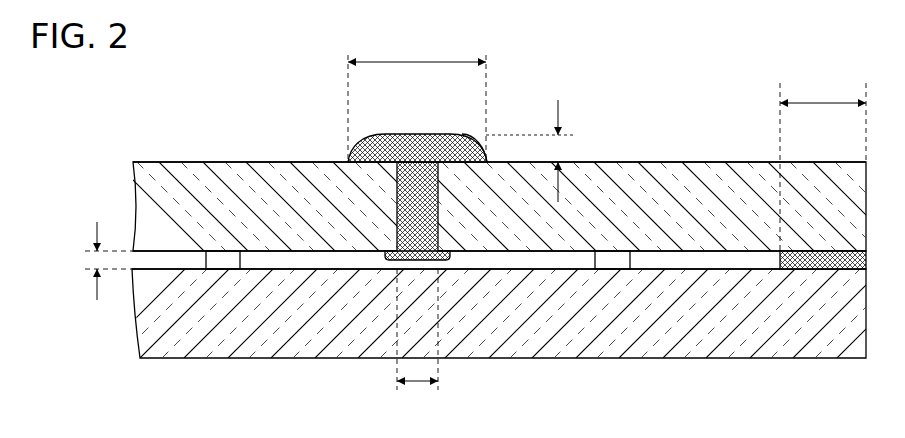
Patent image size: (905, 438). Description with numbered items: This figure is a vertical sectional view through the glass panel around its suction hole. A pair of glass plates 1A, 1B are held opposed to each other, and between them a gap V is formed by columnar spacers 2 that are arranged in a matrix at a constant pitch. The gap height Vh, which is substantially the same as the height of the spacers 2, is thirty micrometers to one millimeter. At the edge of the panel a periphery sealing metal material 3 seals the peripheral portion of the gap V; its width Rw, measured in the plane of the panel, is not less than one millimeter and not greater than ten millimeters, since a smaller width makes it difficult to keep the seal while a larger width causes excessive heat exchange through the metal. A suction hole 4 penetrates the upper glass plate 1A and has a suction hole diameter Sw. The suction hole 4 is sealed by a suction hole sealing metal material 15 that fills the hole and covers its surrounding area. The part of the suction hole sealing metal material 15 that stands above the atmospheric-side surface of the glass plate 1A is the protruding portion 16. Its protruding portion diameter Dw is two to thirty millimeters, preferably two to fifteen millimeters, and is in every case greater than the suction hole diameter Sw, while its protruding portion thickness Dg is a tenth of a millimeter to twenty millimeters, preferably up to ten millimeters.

The glass plate 1A is at (693, 178).
The glass plate 1B is at (614, 345).
The columnar spacer 2 is at (223, 258).
The periphery sealing metal material 3 is at (810, 270).
The suction hole 4 is at (422, 260).
The suction hole sealing metal material 15 is at (418, 135).
The protruding portion 16 is at (487, 148).
The gap V is at (305, 260).
The protruding portion diameter Dw is at (417, 97).
The protruding portion thickness Dg is at (559, 150).
The gap height Vh is at (95, 260).
The suction hole diameter Sw is at (417, 344).
The width of the periphery sealing metal material Rw is at (823, 163).